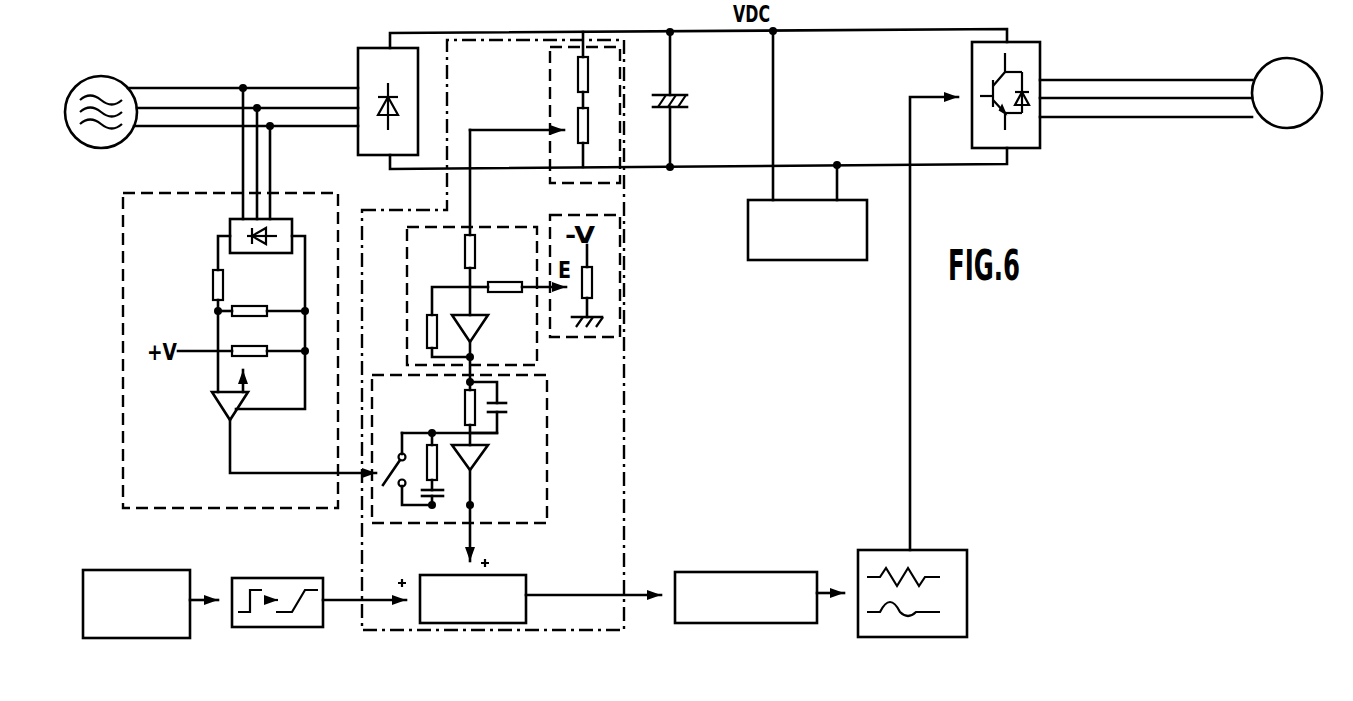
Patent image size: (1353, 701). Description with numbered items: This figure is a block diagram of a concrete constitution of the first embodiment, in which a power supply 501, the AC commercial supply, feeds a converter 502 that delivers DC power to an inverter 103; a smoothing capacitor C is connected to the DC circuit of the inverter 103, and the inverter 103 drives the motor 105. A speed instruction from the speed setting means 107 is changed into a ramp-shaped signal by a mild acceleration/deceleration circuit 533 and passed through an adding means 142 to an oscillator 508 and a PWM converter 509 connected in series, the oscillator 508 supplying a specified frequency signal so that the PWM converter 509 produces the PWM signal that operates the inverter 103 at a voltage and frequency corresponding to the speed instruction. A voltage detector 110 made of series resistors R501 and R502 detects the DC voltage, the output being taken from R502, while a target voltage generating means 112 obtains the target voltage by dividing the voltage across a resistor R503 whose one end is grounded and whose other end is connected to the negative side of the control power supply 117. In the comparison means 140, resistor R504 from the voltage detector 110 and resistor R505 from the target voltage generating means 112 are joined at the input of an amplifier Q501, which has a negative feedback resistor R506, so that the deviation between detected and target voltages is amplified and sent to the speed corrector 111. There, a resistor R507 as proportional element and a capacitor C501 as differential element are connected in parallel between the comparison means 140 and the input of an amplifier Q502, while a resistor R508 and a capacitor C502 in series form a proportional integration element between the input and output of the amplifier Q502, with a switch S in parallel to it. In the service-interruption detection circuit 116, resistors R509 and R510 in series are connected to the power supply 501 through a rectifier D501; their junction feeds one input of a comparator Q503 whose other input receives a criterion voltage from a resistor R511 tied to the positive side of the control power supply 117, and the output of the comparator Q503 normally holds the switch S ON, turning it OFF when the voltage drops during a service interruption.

The power supply 501 is at (127, 135).
The converter 502 is at (378, 48).
The inverter 103 is at (1024, 52).
The motor 105 is at (1308, 85).
The voltage detector 110 is at (620, 176).
The target voltage generating means 112 is at (620, 316).
The voltage detector (service-interruption detection circuit) 116 is at (283, 509).
The speed corrector 111 is at (548, 455).
The comparison means 140 is at (540, 357).
The adding means 142 is at (512, 592).
The control power supply 117 is at (805, 260).
The speed setting means (speed setter) 107 is at (133, 638).
The mild acceleration/deceleration circuit 533 is at (272, 627).
The oscillator 508 is at (783, 583).
The PWM converter 509 is at (955, 572).
The smoothing capacitor C is at (681, 99).
The switch S is at (405, 469).
The resistor R501 is at (576, 72).
The resistor R502 is at (576, 120).
The resistor R503 is at (593, 282).
The resistor R504 is at (465, 250).
The resistor R505 is at (500, 282).
The negative feedback resistor R506 is at (427, 325).
The resistor R507 is at (464, 401).
The resistor R508 is at (440, 472).
The resistor R509 is at (212, 280).
The resistor R510 is at (250, 305).
The resistor R511 is at (237, 345).
The capacitor C501 is at (507, 405).
The capacitor C502 is at (422, 499).
The rectifier D501 is at (230, 226).
The amplifier Q501 is at (473, 325).
The amplifier Q502 is at (472, 453).
The comparator Q503 is at (233, 412).